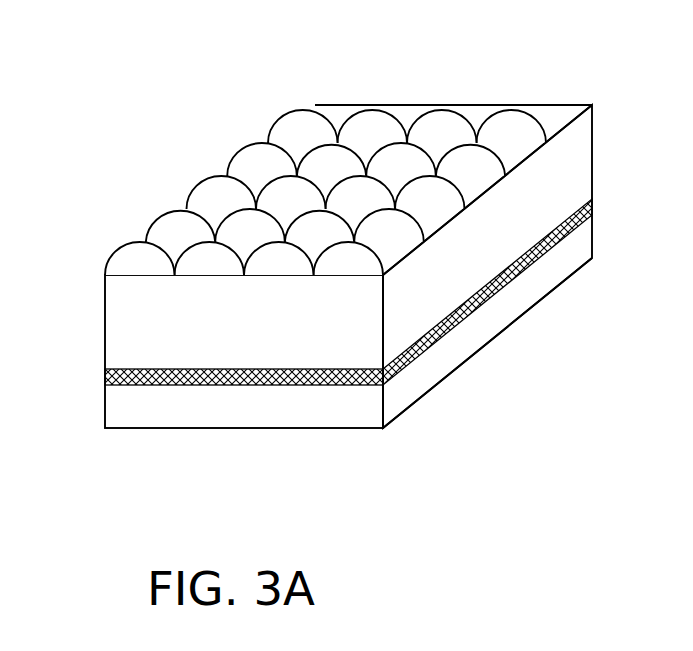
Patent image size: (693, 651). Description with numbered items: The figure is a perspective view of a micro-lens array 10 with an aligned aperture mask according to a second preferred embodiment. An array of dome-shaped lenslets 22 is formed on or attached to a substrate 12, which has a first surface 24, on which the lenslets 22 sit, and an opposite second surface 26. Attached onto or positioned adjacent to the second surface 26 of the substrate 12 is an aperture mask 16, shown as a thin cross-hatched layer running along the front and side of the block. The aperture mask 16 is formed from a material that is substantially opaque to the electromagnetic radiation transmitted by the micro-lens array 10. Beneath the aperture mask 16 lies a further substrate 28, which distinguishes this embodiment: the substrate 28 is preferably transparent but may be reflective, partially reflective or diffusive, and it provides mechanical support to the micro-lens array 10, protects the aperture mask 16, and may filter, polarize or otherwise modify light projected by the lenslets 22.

The micro-lens array 10 is at (349, 227).
The substrate 12 is at (593, 157).
The aperture mask 16 is at (594, 205).
The lenslets 22 is at (282, 112).
The first surface 24 is at (554, 112).
The second surface 26 is at (134, 369).
The substrate 28 is at (593, 230).